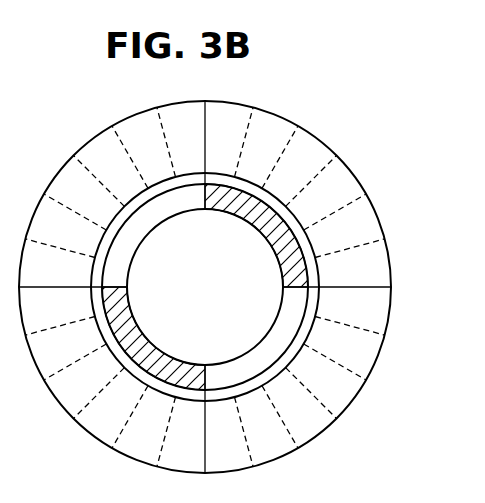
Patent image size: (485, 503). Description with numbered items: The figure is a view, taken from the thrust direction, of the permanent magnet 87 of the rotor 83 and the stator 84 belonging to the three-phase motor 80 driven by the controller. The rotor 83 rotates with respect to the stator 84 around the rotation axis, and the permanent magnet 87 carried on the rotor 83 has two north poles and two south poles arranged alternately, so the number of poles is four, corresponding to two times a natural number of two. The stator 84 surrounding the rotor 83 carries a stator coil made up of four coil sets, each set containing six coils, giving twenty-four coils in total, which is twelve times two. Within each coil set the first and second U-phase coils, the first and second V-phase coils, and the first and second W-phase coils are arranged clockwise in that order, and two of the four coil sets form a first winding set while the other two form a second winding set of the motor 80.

The motor 80 is at (71, 109).
The stator 84 is at (268, 112).
The rotor 83 is at (206, 296).
The permanent magnet 87 is at (133, 310).